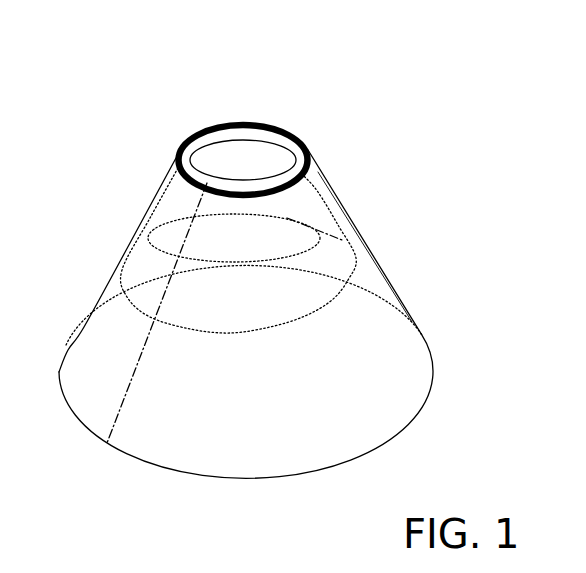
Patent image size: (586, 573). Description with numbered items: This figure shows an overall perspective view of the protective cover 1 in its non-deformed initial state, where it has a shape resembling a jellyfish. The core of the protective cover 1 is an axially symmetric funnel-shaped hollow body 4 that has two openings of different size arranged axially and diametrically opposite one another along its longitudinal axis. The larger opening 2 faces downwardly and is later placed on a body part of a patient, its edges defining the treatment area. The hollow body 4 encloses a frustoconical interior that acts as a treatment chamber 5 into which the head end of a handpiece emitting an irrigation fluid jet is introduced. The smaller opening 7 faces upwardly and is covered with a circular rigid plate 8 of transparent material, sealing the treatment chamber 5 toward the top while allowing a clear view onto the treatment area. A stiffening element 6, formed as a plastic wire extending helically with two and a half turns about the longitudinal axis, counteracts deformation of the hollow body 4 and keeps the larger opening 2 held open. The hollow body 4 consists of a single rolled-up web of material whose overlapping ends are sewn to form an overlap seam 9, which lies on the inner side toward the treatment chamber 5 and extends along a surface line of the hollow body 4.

The protective cover 1 is at (394, 100).
The larger opening 2 is at (275, 376).
The funnel-shaped hollow body 4 is at (376, 270).
The treatment chamber 5 is at (214, 284).
The stiffening element 6 is at (334, 307).
The smaller opening 7 is at (176, 150).
The rigid plate 8 is at (236, 148).
The overlap seam 9 is at (134, 344).